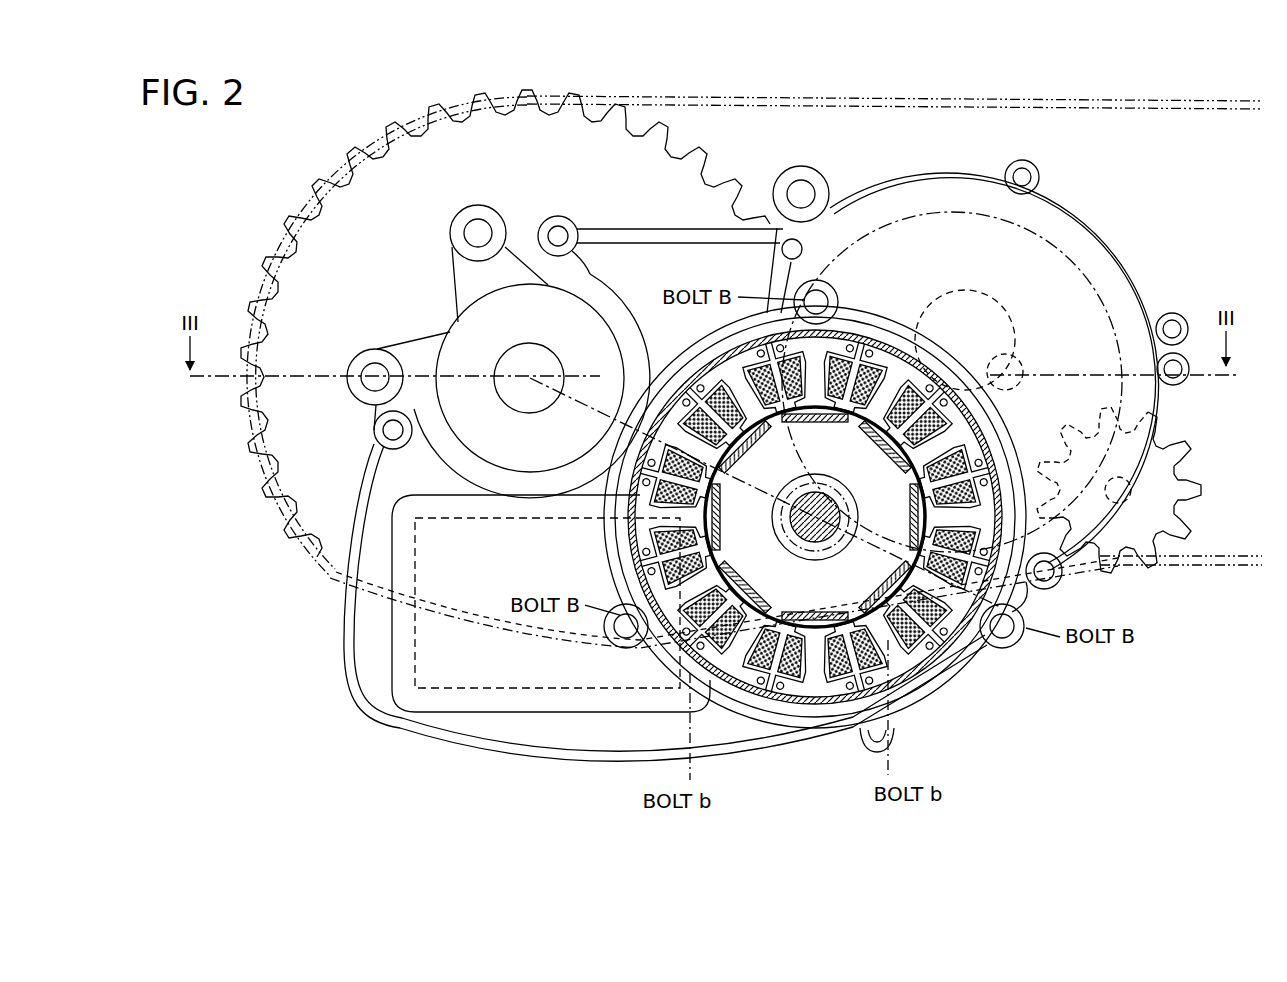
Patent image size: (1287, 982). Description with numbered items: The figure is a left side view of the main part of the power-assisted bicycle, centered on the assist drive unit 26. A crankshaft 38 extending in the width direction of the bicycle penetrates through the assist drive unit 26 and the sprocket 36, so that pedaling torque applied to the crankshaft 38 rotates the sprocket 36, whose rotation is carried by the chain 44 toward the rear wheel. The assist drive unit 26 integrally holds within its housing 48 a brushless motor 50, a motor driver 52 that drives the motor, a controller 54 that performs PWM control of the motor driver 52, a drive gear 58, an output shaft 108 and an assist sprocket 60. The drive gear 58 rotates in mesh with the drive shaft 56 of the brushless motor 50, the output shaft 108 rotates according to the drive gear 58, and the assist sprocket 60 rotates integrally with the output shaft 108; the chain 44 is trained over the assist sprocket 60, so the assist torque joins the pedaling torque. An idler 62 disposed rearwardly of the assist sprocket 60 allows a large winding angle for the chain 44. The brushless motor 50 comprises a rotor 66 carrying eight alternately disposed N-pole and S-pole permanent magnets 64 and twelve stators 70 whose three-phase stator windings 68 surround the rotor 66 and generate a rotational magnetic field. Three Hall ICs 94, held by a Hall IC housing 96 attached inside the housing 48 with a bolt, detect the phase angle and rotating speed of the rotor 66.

The assist drive unit 26 is at (590, 778).
The sprocket 36 is at (352, 205).
The crankshaft 38 is at (518, 344).
The chain 44 is at (1210, 112).
The housing 48 is at (340, 640).
The brushless motor 50 is at (795, 560).
The motor driver 52 is at (500, 720).
The controller 54 is at (430, 705).
The drive shaft 56 is at (850, 508).
The drive gear 58 is at (1085, 236).
The assist sprocket 60 is at (985, 325).
The idler 62 is at (1180, 472).
The permanent magnets 64 is at (652, 542).
The rotor 66 is at (900, 550).
The stator windings 68 is at (825, 690).
The stator 70 is at (905, 640).
The Hall ICs 94 is at (770, 700).
The Hall IC housing 96 is at (930, 655).
The output shaft 108 is at (1020, 358).